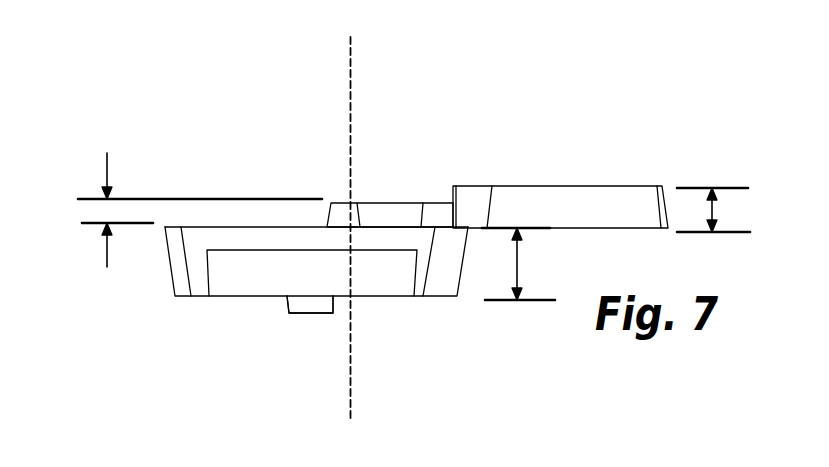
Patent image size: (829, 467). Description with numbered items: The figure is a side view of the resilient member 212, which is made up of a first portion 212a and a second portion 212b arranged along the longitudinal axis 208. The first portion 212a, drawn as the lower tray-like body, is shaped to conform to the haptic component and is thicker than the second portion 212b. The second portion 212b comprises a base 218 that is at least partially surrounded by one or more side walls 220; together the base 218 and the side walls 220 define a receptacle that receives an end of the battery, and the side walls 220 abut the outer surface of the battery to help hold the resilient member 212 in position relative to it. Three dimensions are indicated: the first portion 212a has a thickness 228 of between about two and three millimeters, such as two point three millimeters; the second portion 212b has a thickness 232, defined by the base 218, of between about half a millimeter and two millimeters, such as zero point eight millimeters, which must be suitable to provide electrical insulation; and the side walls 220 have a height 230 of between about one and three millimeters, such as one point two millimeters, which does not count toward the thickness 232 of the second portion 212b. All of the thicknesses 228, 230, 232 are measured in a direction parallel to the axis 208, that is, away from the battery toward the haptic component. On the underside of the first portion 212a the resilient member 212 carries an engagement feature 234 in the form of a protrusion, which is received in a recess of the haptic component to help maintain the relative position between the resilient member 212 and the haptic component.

The longitudinal axis 208 is at (351, 60).
The resilient member 212 is at (513, 65).
The first portion 212a is at (463, 305).
The second portion 212b is at (664, 183).
The base 218 is at (388, 203).
The side walls 220 is at (622, 187).
The thickness of the first portion 228 is at (517, 260).
The thickness/height of the side walls 230 is at (712, 208).
The thickness of the second portion 232 is at (107, 255).
The engagement feature 234 is at (325, 305).